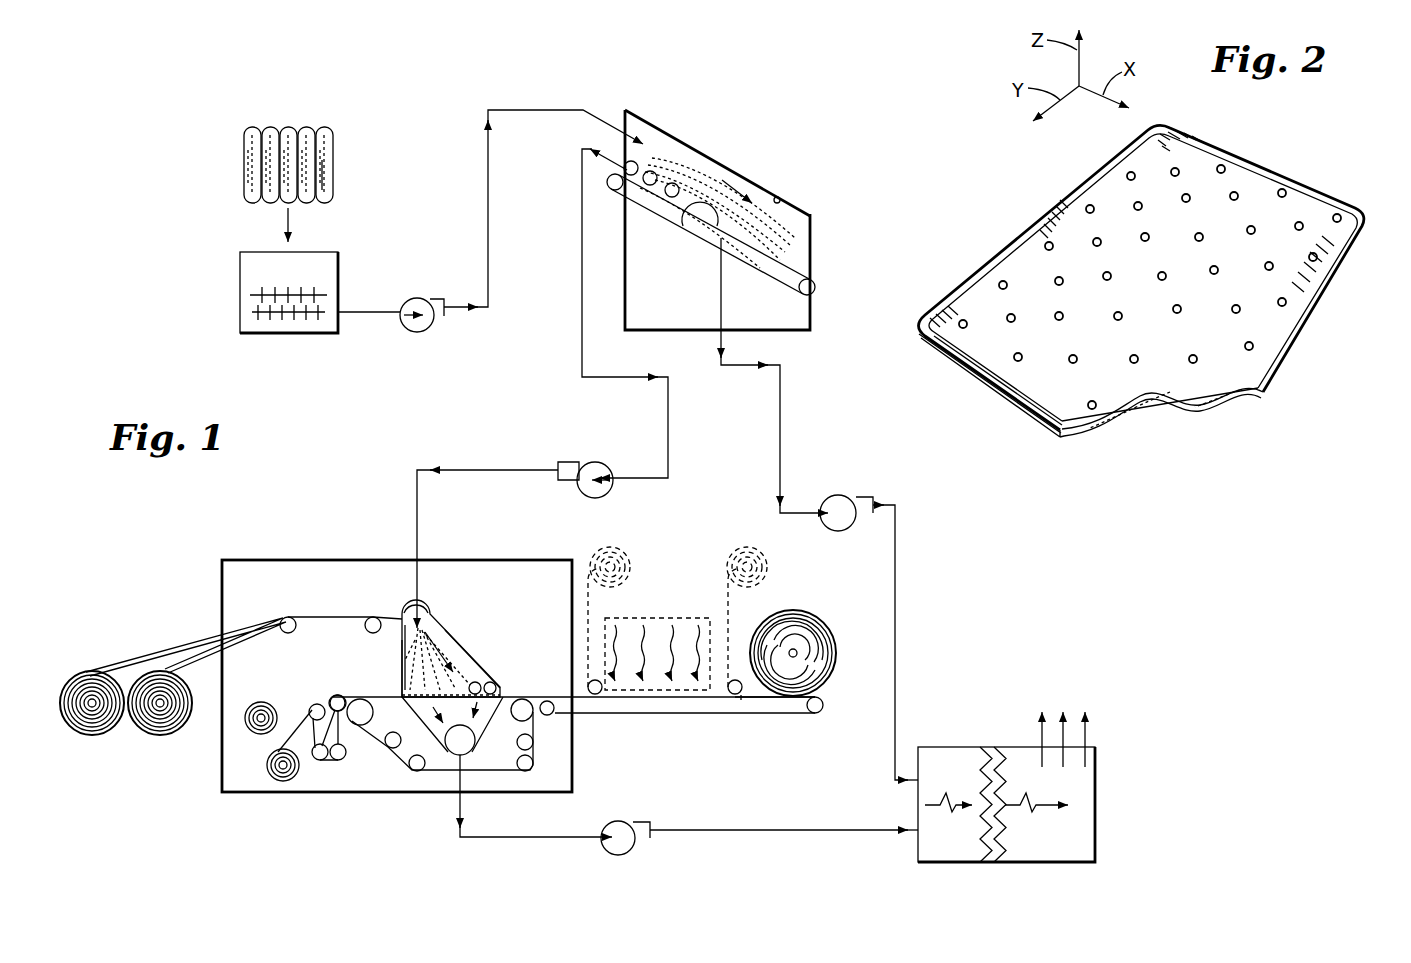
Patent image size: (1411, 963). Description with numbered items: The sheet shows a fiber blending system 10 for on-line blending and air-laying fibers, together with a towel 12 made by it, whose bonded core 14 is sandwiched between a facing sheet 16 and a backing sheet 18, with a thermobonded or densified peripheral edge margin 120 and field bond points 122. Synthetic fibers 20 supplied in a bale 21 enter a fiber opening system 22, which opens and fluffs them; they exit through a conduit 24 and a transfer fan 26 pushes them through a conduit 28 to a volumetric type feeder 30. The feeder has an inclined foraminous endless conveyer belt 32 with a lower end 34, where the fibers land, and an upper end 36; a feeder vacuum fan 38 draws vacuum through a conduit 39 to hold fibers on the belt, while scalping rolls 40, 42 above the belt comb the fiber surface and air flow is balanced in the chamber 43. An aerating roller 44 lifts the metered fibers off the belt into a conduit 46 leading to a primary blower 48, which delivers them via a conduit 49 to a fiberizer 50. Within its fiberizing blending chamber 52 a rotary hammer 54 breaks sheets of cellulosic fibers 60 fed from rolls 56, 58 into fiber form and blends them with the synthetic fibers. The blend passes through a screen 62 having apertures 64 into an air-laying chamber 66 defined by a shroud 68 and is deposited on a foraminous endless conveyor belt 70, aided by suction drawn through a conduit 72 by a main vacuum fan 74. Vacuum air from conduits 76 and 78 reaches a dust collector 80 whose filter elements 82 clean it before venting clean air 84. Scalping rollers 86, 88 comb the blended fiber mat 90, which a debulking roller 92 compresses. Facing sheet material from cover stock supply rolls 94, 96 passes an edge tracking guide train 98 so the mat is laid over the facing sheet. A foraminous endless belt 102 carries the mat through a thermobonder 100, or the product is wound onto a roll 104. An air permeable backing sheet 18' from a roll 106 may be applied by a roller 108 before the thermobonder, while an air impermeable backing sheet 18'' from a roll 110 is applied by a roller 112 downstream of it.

In FIG. 1, the fiber blending system 10 is at (160, 145).
In FIG. 2, the towel 12 is at (1027, 152).
In FIG. 1, the bonded core 14 is at (746, 698).
In FIG. 2, the bonded core 14 is at (1203, 398).
In FIG. 1, the facing layer or sheet 16 is at (281, 740).
In FIG. 2, the facing layer or sheet 16 is at (1070, 392).
In FIG. 1, the backing layer or sheet 18 is at (670, 630).
In FIG. 2, the backing layer or sheet 18 is at (1098, 449).
In FIG. 1, the air permeable backing sheet 18' is at (619, 598).
In FIG. 1, the air impermeable backing sheet 18'' is at (766, 589).
In FIG. 1, the synthetic fibers 20 is at (344, 160).
In FIG. 1, the bale 21 is at (325, 185).
In FIG. 1, the fiber opening system 22 is at (240, 300).
In FIG. 1, the conduit 24 is at (369, 318).
In FIG. 1, the transfer fan 26 is at (417, 298).
In FIG. 1, the conduit 28 is at (488, 169).
In FIG. 1, the volumetric type feeder 30 is at (753, 160).
In FIG. 1, the inclined foraminous endless conveyer belt 32 is at (718, 226).
In FIG. 1, the lower end 34 is at (797, 266).
In FIG. 1, the upper end 36 is at (646, 186).
In FIG. 1, the feeder vacuum fan 38 is at (848, 500).
In FIG. 1, the conduit 39 is at (780, 393).
In FIG. 1, the scalping roll 40 is at (675, 184).
In FIG. 1, the scalping roll 42 is at (653, 172).
In FIG. 1, the chamber 43 is at (780, 197).
In FIG. 1, the aerating roller 44 is at (636, 162).
In FIG. 1, the conduit 46 is at (582, 245).
In FIG. 1, the primary blower 48 is at (594, 466).
In FIG. 1, the conduit 49 is at (466, 470).
In FIG. 1, the fiberizer 50 is at (397, 613).
In FIG. 1, the fiberizing blending chamber 52 is at (429, 615).
In FIG. 1, the rotary hammer 54 is at (405, 617).
In FIG. 1, the roll 56 is at (100, 736).
In FIG. 1, the roll 58 is at (153, 722).
In FIG. 1, the cellulosic fibers 60 is at (329, 614).
In FIG. 1, the screen 62 is at (412, 643).
In FIG. 1, the apertures 64 is at (432, 634).
In FIG. 1, the air-laying chamber 66 is at (402, 660).
In FIG. 1, the shroud 68 is at (462, 654).
In FIG. 1, the foraminous endless conveyor belt 70 is at (388, 699).
In FIG. 1, the conduit 72 is at (528, 838).
In FIG. 1, the main vacuum fan 74 is at (636, 843).
In FIG. 1, the conduit 76 is at (896, 594).
In FIG. 1, the conduit 78 is at (817, 832).
In FIG. 1, the dust collector 80 is at (1115, 780).
In FIG. 1, the filter element 82 is at (1004, 840).
In FIG. 1, the clean air 84 is at (1087, 731).
In FIG. 1, the scalping roller 86 is at (478, 684).
In FIG. 1, the scalping roller 88 is at (494, 684).
In FIG. 1, the blended fiber mat 90 is at (402, 684).
In FIG. 1, the debulking roller 92 is at (531, 693).
In FIG. 1, the cover stock supply roll 94 is at (281, 778).
In FIG. 1, the cover stock supply roll 96 is at (247, 722).
In FIG. 1, the edge tracking guide train 98 is at (343, 770).
In FIG. 1, the thermobonder 100 is at (673, 617).
In FIG. 1, the foraminous endless belt 102 is at (641, 715).
In FIG. 1, the roll 104 is at (807, 645).
In FIG. 1, the roll 106 is at (622, 550).
In FIG. 1, the roller 108 is at (597, 695).
In FIG. 1, the roll 110 is at (745, 550).
In FIG. 1, the roller 112 is at (730, 695).
In FIG. 2, the peripheral edge margin 120 is at (987, 257).
In FIG. 2, the field bond points 122 is at (1119, 312).